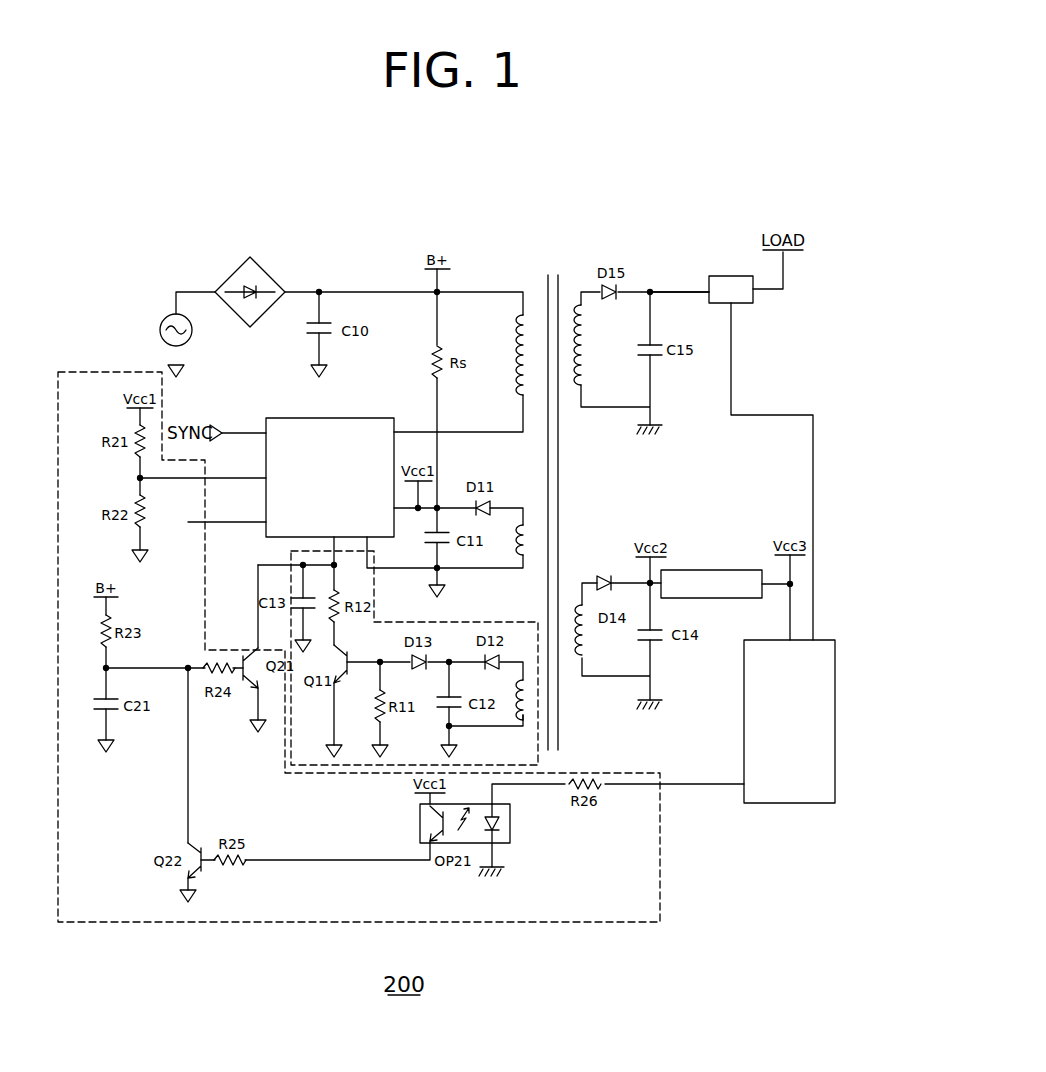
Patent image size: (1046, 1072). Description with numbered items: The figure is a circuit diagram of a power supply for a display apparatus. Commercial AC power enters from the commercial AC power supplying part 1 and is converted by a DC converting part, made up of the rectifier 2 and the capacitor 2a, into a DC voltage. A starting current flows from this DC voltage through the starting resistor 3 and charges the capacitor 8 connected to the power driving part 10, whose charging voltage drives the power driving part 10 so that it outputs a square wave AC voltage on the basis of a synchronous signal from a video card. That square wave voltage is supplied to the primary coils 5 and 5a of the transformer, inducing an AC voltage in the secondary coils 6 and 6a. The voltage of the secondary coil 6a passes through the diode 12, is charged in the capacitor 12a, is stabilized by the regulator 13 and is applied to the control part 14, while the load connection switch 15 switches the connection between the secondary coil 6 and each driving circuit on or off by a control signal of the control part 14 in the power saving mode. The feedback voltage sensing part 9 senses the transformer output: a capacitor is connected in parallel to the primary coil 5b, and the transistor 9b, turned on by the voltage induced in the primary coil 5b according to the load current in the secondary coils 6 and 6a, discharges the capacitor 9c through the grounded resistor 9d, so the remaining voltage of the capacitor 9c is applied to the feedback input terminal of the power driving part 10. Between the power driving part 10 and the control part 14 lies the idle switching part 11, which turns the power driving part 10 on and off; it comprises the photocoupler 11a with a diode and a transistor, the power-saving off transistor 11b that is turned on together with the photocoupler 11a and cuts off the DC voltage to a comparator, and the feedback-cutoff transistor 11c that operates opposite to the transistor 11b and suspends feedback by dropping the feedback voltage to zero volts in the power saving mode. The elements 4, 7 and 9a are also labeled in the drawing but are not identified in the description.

The commercial AC power supplying part 1 is at (160, 326).
The rectifier 2 is at (245, 283).
The capacitor 2a is at (322, 320).
The starting resistor 3 is at (440, 358).
The B+ terminal 4 is at (445, 262).
The primary coil 5 is at (523, 318).
The primary coil 5a is at (530, 527).
The primary coil 5b is at (528, 725).
The secondary coil 6 is at (582, 392).
The secondary coil 6a is at (585, 605).
The diode D11 7 is at (491, 502).
The capacitor 8 is at (444, 546).
The feedback voltage sensing part 9 is at (540, 763).
The diode D12 9a is at (498, 660).
The transistor 9b is at (336, 657).
The capacitor 9c is at (299, 594).
The resistor 9d is at (340, 592).
The power driving part 10 is at (289, 418).
The idle switching part 11 is at (58, 645).
The photocoupler 11a is at (505, 840).
The power-saving off transistor 11b is at (195, 846).
The feedback-cutoff transistor 11c is at (256, 680).
The diode 12 is at (603, 574).
The capacitor 12a is at (651, 650).
The regulator 13 is at (702, 570).
The control part 14 is at (835, 700).
The load connection switch 15 is at (718, 276).